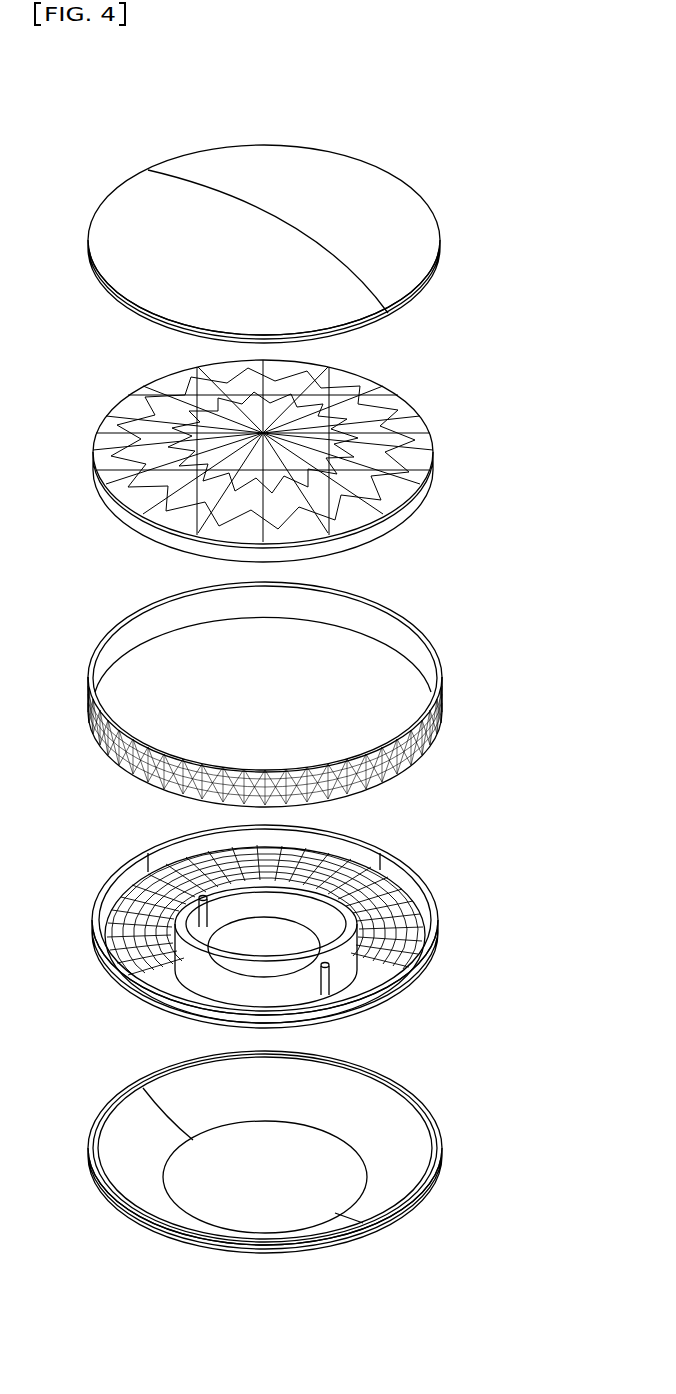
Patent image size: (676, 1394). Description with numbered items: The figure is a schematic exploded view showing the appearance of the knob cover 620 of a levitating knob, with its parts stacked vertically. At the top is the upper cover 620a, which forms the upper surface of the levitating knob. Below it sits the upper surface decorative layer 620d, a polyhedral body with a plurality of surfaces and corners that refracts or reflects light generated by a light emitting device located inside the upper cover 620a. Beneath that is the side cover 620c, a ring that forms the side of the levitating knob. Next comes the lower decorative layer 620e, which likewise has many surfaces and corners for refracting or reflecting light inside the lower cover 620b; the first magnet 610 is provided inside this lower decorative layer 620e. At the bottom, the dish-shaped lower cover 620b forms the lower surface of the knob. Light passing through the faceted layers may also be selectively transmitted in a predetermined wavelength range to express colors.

The knob cover 620 is at (92, 113).
The upper cover 620a is at (453, 225).
The upper surface decorative layer 620d is at (453, 453).
The side cover 620c is at (453, 688).
The lower decorative layer 620e is at (337, 926).
The first magnet 610 is at (294, 947).
The lower cover 620b is at (453, 1143).